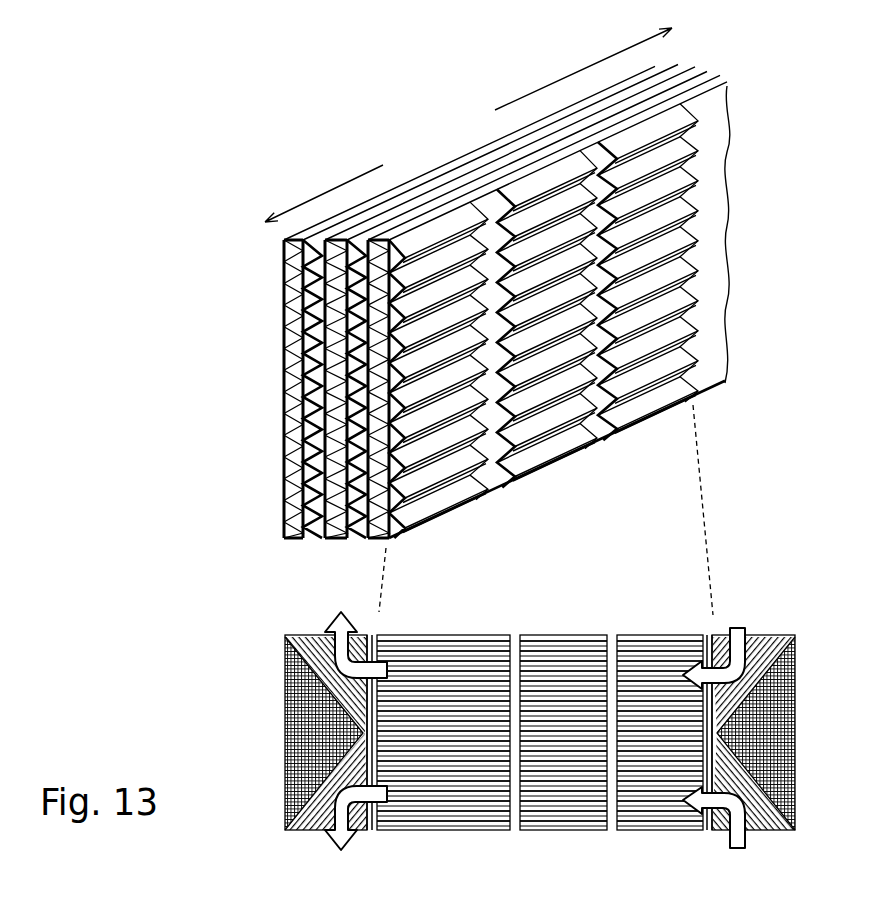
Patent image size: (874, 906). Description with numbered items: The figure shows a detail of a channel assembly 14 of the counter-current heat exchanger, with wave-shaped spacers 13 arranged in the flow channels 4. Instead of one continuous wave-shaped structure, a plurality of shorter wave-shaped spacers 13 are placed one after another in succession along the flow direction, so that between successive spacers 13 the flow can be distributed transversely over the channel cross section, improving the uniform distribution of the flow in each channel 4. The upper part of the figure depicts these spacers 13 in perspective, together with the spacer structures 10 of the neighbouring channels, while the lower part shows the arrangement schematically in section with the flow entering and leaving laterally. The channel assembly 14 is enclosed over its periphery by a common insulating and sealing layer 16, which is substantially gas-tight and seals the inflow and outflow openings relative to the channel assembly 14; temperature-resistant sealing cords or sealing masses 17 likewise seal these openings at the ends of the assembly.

The flow channel 4 is at (563, 732).
The corrugated spacer sheet 10 is at (310, 540).
The wave-shaped spacer 13 is at (557, 462).
The channel assembly 14 is at (468, 125).
The insulating and sealing layer 16 is at (539, 735).
The sealing cords or sealing masses 17 is at (540, 732).